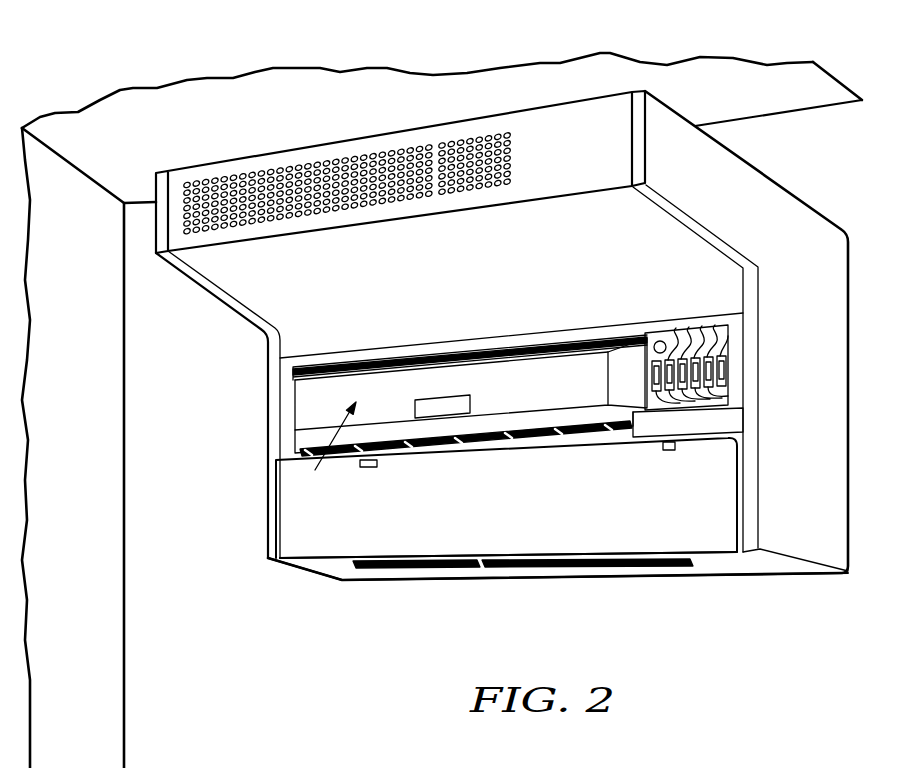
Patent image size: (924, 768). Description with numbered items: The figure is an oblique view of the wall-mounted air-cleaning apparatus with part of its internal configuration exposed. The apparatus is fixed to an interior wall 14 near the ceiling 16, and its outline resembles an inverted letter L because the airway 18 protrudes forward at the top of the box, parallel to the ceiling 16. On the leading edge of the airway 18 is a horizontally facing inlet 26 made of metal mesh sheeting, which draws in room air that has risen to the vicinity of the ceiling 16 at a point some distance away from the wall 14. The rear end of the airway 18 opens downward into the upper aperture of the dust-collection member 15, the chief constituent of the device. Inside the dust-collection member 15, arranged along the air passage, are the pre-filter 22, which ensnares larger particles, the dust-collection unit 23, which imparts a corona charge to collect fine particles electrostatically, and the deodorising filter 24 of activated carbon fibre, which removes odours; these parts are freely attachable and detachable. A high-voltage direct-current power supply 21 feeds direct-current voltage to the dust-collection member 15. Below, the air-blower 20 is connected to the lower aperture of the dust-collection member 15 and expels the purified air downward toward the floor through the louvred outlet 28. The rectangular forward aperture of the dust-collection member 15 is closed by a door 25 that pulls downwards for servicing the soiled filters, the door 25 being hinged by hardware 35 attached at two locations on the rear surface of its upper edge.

The interior wall 14 is at (224, 736).
The dust-collection member 15 is at (323, 450).
The ceiling 16 is at (625, 38).
The airway 18 is at (221, 277).
The air-blower 20 is at (725, 566).
The high-voltage direct-current power supply 21 is at (714, 425).
The pre-filter 22 is at (527, 347).
The dust-collection unit 23 is at (498, 403).
The deodorising filter 24 is at (572, 442).
The door 25 is at (410, 543).
The inlet 26 is at (268, 174).
The outlet 28 is at (515, 573).
The hardware 35 is at (365, 466).